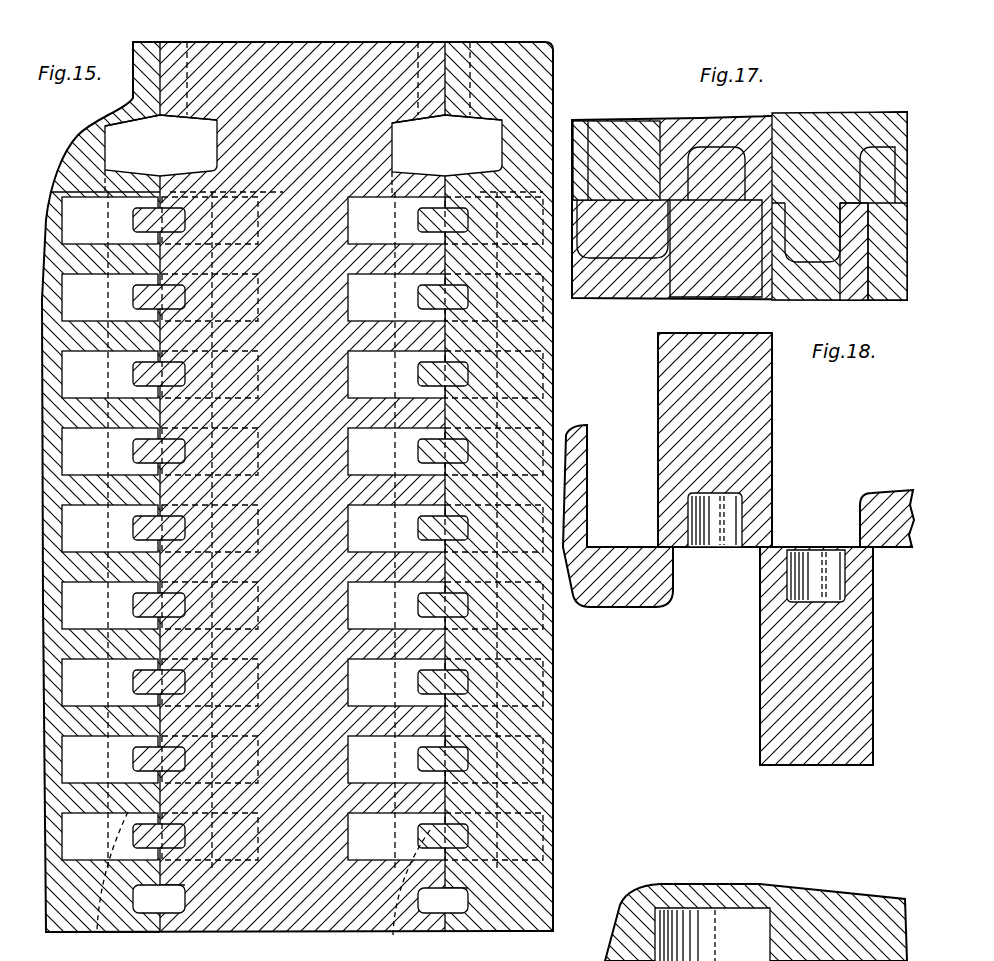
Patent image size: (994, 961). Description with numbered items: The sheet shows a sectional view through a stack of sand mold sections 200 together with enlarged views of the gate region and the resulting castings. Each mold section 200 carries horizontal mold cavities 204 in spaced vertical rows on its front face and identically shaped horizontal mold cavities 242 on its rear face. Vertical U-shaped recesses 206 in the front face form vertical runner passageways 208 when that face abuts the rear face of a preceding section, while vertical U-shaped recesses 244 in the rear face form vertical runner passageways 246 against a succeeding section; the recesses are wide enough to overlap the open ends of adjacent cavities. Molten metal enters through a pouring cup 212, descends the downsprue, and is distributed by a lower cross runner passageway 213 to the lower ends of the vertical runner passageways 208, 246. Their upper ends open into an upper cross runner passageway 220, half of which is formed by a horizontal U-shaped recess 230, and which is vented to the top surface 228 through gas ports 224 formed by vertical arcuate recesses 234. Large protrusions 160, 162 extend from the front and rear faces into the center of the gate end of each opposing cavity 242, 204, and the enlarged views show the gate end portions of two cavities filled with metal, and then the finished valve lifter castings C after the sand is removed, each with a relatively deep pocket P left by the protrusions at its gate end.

In FIG. 15, the mold section 200 is at (143, 43).
In FIG. 15, the horizontal mold cavities 204 is at (258, 256).
In FIG. 17, the horizontal mold cavities 204 is at (658, 140).
In FIG. 15, the vertical U-shaped recesses 206 is at (228, 168).
In FIG. 15, the vertical runner passageways 208 is at (468, 826).
In FIG. 15, the pouring cup 212 is at (168, 908).
In FIG. 15, the lower cross runner passageway 213 is at (462, 905).
In FIG. 15, the upper cross runner passageway 220 is at (104, 138).
In FIG. 15, the gas ports 224 is at (192, 62).
In FIG. 15, the top surface 228 is at (256, 42).
In FIG. 15, the horizontal U-shaped recess 230 is at (222, 118).
In FIG. 15, the vertical arcuate recesses 234 is at (556, 62).
In FIG. 15, the horizontal mold cavities 242 is at (387, 851).
In FIG. 17, the horizontal mold cavities 242 is at (756, 302).
In FIG. 15, the vertical U-shaped recesses 244 is at (262, 810).
In FIG. 15, the vertical runner passageway 246 is at (115, 905).
In FIG. 17, the protrusion 160 is at (640, 262).
In FIG. 17, the protrusion 162 is at (745, 130).
In FIG. 18, the valve lifter castings C is at (773, 438).
In FIG. 18, the pocket P is at (742, 512).